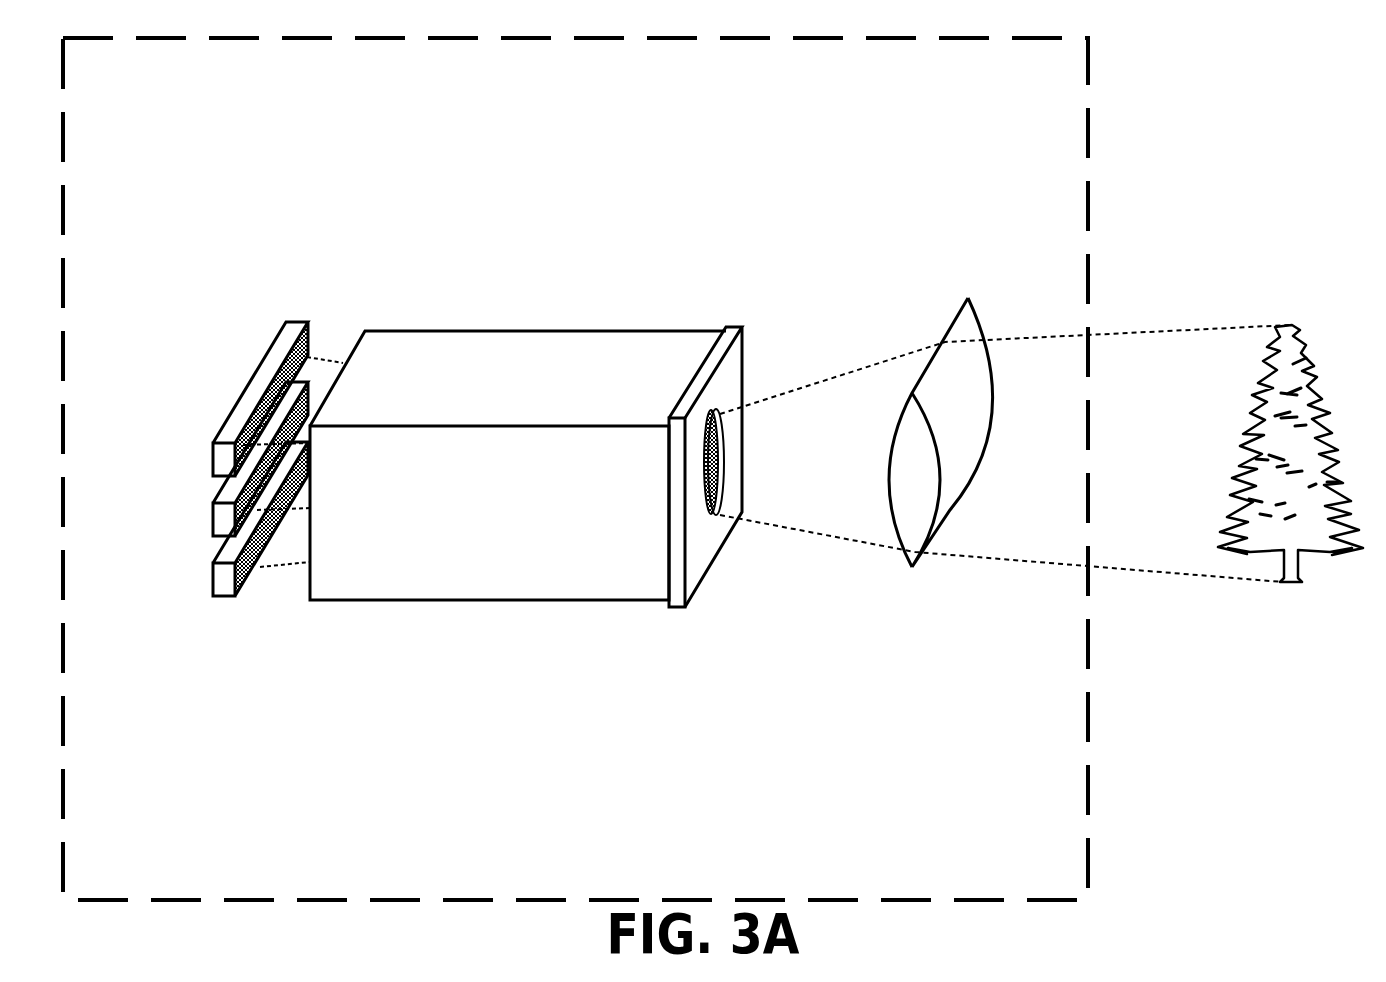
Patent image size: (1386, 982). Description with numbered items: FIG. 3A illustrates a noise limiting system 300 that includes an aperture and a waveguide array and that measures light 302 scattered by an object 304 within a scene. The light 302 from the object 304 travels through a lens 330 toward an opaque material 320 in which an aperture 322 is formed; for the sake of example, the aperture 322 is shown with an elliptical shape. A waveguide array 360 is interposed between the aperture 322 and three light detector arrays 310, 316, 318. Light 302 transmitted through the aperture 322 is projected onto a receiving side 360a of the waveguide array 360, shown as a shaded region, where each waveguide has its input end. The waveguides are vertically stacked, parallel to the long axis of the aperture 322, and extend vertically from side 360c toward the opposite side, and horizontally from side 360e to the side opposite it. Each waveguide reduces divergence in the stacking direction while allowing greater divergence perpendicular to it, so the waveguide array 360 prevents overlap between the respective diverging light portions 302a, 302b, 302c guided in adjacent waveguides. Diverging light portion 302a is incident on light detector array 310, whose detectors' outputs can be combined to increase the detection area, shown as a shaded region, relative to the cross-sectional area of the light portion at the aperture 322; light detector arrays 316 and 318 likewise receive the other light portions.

The noise limiting system 300 is at (1092, 148).
The light 302 is at (771, 532).
The diverging light portion 302a is at (315, 350).
The diverging light portion 302b is at (293, 519).
The diverging light portion 302c is at (263, 574).
The object 304 is at (1290, 396).
The light detector array 310 is at (232, 432).
The light detector array 316 is at (232, 490).
The light detector array 318 is at (232, 550).
The opaque material 320 is at (730, 367).
The aperture 322 is at (724, 416).
The lens 330 is at (968, 328).
The waveguide array 360 is at (467, 518).
The receiving side 360a is at (722, 484).
The side 360c is at (500, 350).
The side 360e is at (497, 577).